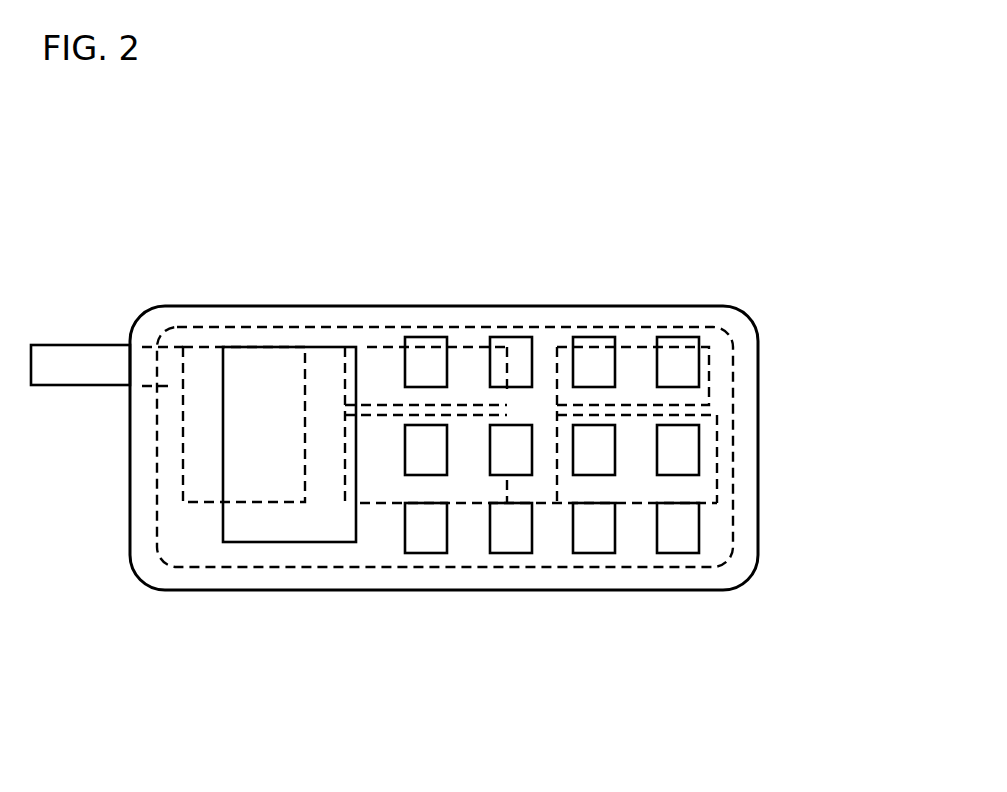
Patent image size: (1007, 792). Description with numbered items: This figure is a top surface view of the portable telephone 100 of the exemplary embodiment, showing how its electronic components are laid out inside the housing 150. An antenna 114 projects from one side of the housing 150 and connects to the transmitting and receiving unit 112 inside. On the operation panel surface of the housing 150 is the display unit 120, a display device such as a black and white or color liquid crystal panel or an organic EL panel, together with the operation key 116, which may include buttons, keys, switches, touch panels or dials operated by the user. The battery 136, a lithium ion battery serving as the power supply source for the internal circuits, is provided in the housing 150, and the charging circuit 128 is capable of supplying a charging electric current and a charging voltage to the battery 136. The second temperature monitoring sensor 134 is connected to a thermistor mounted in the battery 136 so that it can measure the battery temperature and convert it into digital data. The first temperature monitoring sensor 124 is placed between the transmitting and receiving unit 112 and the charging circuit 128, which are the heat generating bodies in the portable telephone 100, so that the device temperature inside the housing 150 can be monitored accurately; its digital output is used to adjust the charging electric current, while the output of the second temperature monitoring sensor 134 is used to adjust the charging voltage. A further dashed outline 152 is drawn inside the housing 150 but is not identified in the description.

The portable telephone 100 is at (626, 257).
The antenna 114 is at (72, 345).
The housing 150 is at (417, 306).
The circuit board 152 is at (730, 377).
The transmitting and receiving unit 112 is at (200, 502).
The display unit 120 is at (290, 542).
The first temperature monitoring sensor 124 is at (375, 503).
The second temperature monitoring sensor 134 is at (467, 345).
The battery 136 is at (647, 345).
The charging circuit 128 is at (717, 487).
The operation key 116 is at (425, 552).